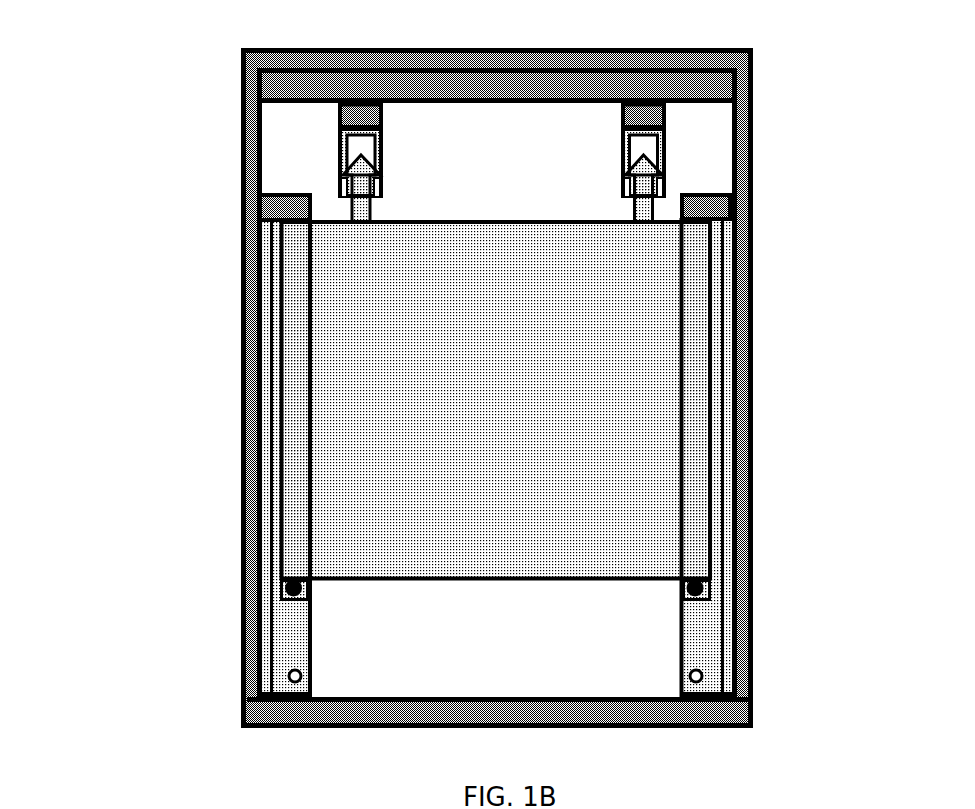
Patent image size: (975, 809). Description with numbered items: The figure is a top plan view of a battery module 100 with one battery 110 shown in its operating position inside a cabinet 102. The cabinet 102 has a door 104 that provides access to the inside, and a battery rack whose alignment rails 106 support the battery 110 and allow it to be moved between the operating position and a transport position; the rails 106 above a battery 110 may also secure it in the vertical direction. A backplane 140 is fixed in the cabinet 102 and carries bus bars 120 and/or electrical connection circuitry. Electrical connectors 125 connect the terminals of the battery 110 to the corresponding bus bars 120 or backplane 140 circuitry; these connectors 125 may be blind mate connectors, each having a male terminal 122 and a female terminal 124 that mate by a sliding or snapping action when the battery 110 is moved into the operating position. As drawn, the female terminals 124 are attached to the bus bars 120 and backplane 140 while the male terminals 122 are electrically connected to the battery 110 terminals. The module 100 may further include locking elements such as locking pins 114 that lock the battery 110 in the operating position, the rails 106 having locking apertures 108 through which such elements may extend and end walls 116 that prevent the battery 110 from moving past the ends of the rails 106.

The battery module 100 is at (518, 37).
The cabinet 102 is at (752, 385).
The door 104 is at (247, 716).
The alignment rails 106 is at (270, 640).
The locking apertures 108 is at (287, 675).
The battery 110 is at (518, 415).
The locking pins 114 is at (280, 590).
The end walls 116 is at (737, 207).
The bus bars 120 is at (340, 112).
The male terminal 122 is at (360, 196).
The female terminal 124 is at (337, 160).
The electrical connectors 125 is at (337, 152).
The backplane 140 is at (737, 88).